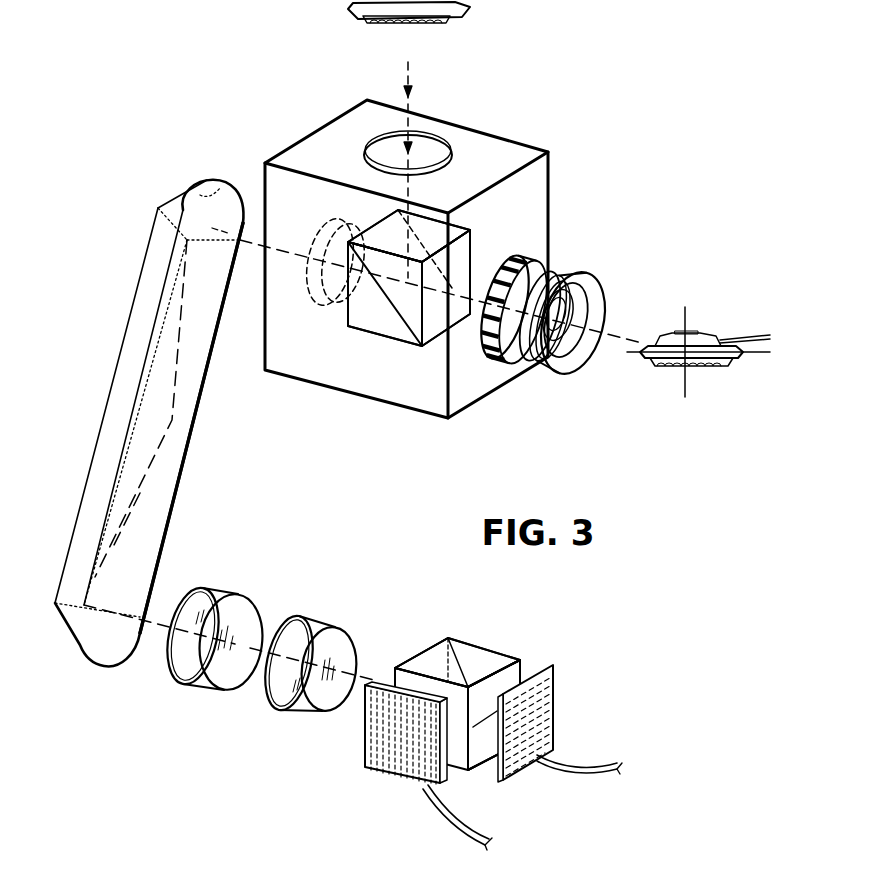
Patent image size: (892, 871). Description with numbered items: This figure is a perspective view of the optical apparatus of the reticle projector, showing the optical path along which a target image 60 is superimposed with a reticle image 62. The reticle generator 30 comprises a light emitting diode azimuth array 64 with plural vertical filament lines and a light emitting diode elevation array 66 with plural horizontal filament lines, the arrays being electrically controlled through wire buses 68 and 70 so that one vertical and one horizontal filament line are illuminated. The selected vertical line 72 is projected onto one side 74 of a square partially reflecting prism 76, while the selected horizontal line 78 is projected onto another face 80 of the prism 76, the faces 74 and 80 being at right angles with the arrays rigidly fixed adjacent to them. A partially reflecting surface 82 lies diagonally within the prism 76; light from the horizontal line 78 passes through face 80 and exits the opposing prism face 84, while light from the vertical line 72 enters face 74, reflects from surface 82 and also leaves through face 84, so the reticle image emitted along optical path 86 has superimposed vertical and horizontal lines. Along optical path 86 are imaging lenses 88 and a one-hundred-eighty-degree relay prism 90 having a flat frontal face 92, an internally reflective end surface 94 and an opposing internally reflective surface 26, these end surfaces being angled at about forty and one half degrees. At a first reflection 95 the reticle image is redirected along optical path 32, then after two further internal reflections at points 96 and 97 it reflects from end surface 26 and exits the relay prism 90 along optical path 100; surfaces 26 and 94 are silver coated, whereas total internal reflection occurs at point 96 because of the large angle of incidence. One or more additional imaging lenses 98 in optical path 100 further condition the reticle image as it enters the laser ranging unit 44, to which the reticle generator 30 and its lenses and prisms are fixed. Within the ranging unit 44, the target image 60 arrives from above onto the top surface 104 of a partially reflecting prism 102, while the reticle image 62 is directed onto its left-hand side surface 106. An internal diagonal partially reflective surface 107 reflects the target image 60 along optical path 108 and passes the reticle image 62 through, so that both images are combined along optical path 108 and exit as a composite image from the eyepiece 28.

The opposing internally reflective surface 26 is at (218, 175).
The eyepiece 28 is at (565, 272).
The reticle generator 30 is at (467, 716).
The optical path 32 is at (112, 547).
The laser ranging unit 44 is at (558, 168).
The target image 60 is at (450, 8).
The reticle image 62 is at (749, 358).
The light emitting diode azimuth array 64 is at (365, 755).
The light emitting diode elevation array 66 is at (553, 690).
The wire bus 68 is at (447, 828).
The wire bus 70 is at (593, 770).
The selected vertical line 72 is at (682, 377).
The prism side 74 is at (452, 755).
The partially reflecting prism 76 is at (437, 651).
The selected horizontal line 78 is at (635, 356).
The prism face 80 is at (517, 667).
The partially reflecting surface 82 is at (465, 648).
The opposing prism face 84 is at (422, 650).
The optical path 86 is at (362, 683).
The imaging lenses 88 is at (288, 622).
The relay prism 90 is at (172, 512).
The flat frontal face 92 is at (190, 373).
The internally reflective end surface 94 is at (102, 667).
The first reflection 95 is at (88, 616).
The internal reflection 96 is at (173, 420).
The internal reflection 97 is at (191, 226).
The additional imaging lenses 98 is at (318, 226).
The optical path 100 is at (253, 242).
The partially reflecting prism 102 is at (376, 345).
The top surface 104 is at (427, 232).
The left-hand side surface 106 is at (340, 313).
The partially reflective surface 107 is at (398, 333).
The optical path 108 is at (480, 297).